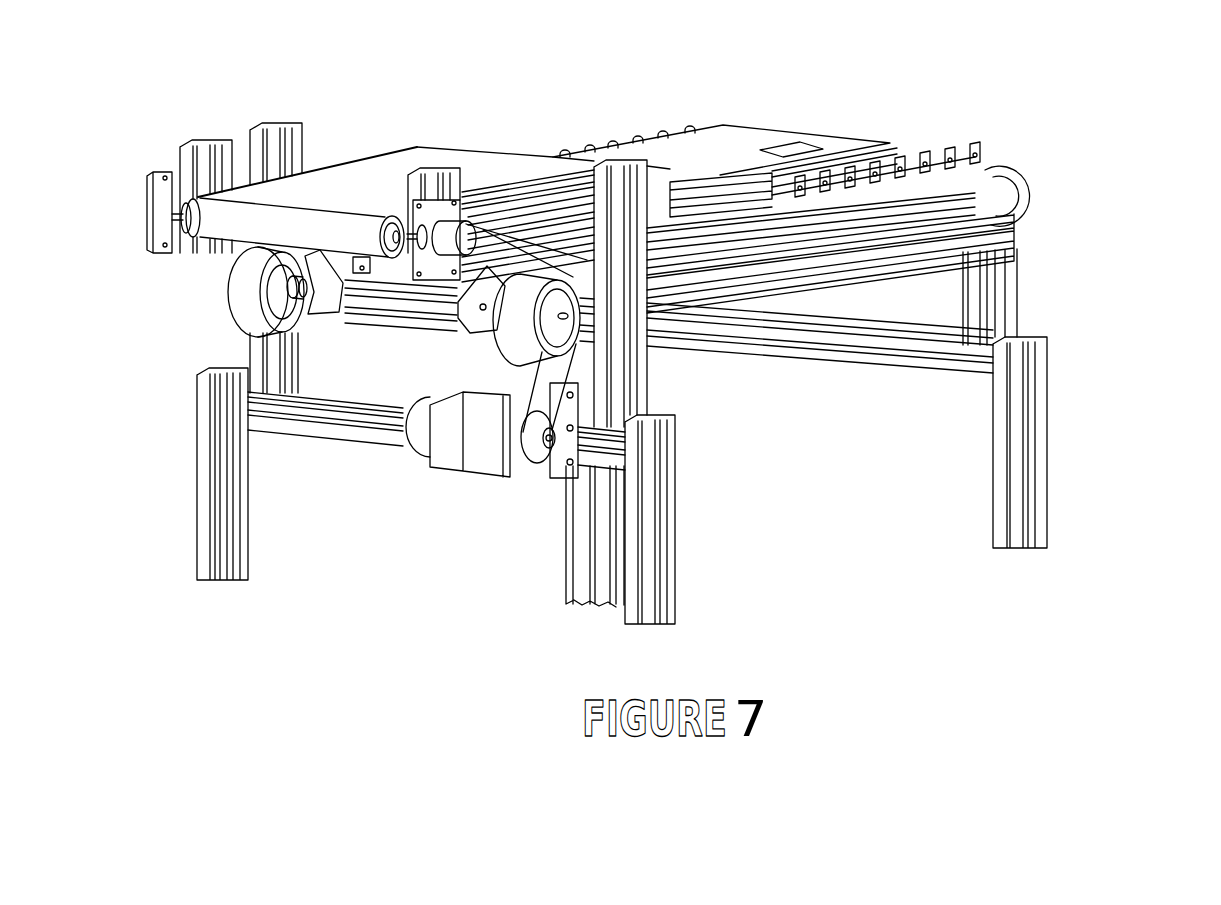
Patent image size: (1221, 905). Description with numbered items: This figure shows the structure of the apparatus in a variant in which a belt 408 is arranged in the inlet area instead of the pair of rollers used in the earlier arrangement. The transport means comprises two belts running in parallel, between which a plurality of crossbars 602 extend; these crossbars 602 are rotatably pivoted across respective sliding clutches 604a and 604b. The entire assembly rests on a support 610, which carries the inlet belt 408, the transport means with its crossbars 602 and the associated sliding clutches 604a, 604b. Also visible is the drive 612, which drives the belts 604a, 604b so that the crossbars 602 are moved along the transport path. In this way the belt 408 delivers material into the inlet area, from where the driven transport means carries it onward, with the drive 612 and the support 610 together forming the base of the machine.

The belt 408 is at (350, 149).
The crossbars 602 is at (801, 129).
The sliding clutch 604a is at (1075, 196).
The sliding clutch 604b is at (379, 410).
The support 610 is at (1089, 442).
The drive 612 is at (492, 488).